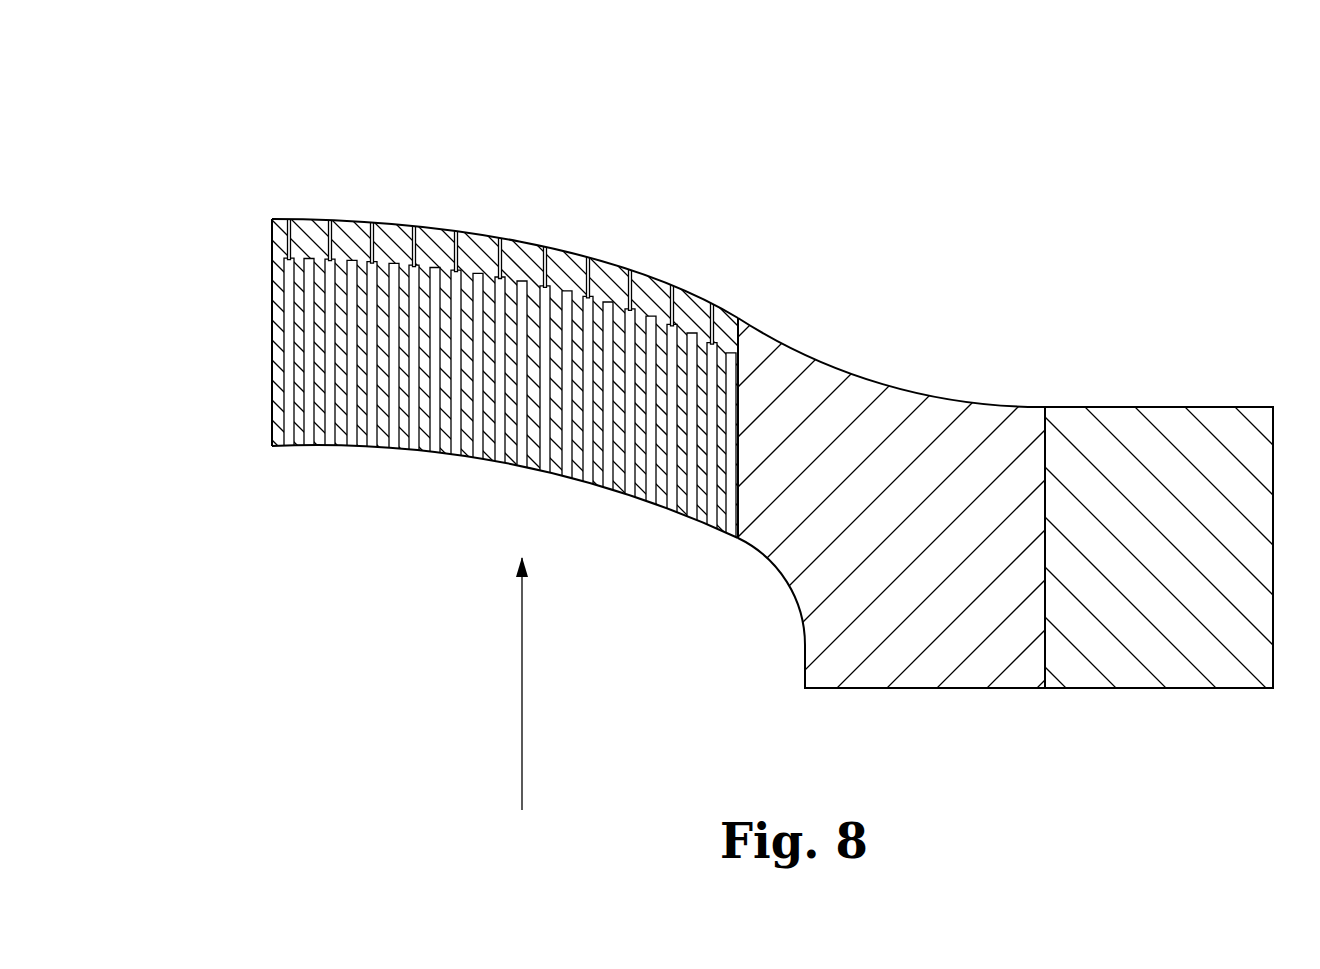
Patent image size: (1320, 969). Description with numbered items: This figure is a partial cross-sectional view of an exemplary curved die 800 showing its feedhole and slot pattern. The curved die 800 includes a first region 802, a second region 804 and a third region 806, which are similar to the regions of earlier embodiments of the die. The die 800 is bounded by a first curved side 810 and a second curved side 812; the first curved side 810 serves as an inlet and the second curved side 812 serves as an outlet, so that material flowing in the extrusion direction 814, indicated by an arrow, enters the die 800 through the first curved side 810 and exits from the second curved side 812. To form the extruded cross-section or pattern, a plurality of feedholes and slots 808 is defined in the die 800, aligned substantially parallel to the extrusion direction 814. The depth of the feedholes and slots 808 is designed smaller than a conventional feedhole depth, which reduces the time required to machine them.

The curved die 800 is at (660, 379).
The first region 802 is at (536, 325).
The second region 804 is at (938, 562).
The third region 806 is at (1182, 562).
The plurality of feedholes and slots 808 is at (353, 440).
The first curved side 810 is at (555, 478).
The second curved side 812 is at (604, 256).
The extrusion direction 814 is at (522, 785).